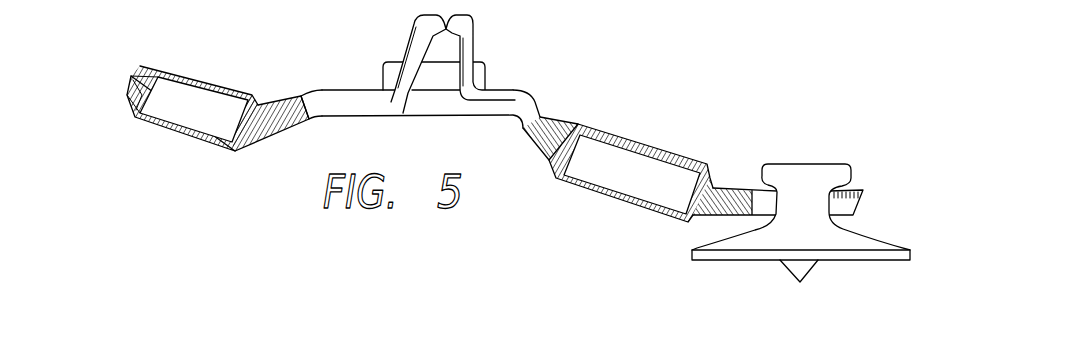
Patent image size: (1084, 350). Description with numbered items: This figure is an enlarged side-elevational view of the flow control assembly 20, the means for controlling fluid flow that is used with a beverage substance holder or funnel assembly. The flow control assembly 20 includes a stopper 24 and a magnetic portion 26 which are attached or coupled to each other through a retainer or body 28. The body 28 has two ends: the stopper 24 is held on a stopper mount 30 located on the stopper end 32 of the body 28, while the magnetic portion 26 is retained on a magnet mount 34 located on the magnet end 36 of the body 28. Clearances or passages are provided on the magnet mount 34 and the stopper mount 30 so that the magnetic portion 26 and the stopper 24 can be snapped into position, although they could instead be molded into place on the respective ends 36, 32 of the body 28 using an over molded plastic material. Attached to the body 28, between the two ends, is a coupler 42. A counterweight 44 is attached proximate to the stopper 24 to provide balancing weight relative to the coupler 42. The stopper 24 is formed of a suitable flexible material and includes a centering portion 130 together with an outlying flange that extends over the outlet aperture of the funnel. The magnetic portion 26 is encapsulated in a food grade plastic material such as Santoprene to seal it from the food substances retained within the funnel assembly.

The flow control assembly 20 is at (113, 57).
The stopper 24 is at (878, 225).
The magnetic portion 26 is at (178, 92).
The body 28 is at (287, 153).
The stopper mount 30 is at (860, 193).
The stopper end 32 is at (645, 120).
The magnet mount 34 is at (130, 86).
The magnet end 36 is at (298, 77).
The coupler 42 is at (483, 17).
The counterweight 44 is at (582, 170).
The centering portion 130 is at (813, 272).